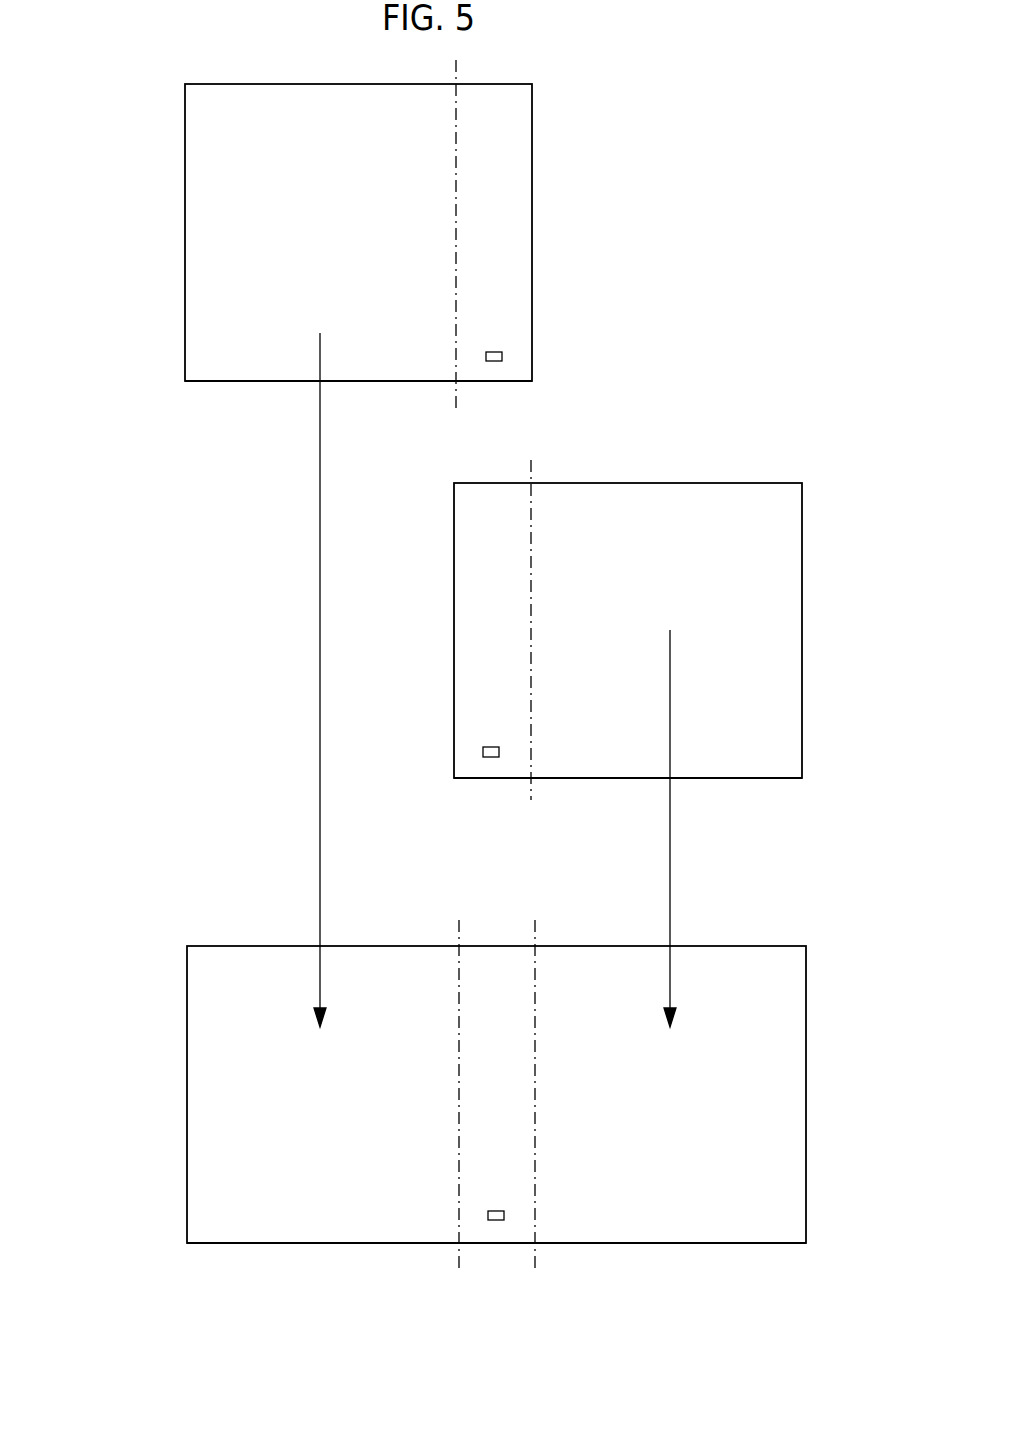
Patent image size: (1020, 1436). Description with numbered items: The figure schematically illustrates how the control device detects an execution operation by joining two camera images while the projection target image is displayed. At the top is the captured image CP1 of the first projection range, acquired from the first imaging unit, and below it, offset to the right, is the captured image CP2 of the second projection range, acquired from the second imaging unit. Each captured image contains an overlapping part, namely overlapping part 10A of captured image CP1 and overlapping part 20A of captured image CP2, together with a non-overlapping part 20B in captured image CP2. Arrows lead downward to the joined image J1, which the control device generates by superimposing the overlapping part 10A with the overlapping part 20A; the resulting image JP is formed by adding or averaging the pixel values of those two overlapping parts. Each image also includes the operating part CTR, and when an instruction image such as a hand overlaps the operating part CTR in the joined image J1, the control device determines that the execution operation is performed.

The captured image CP1 is at (185, 215).
The captured image CP2 is at (454, 585).
The joined image J1 is at (187, 1077).
The operating part CTR is at (502, 355).
The overlapping part 10A is at (495, 368).
The overlapping part 20A is at (488, 767).
The non-overlapping part 20B is at (560, 766).
The image JP is at (494, 1228).